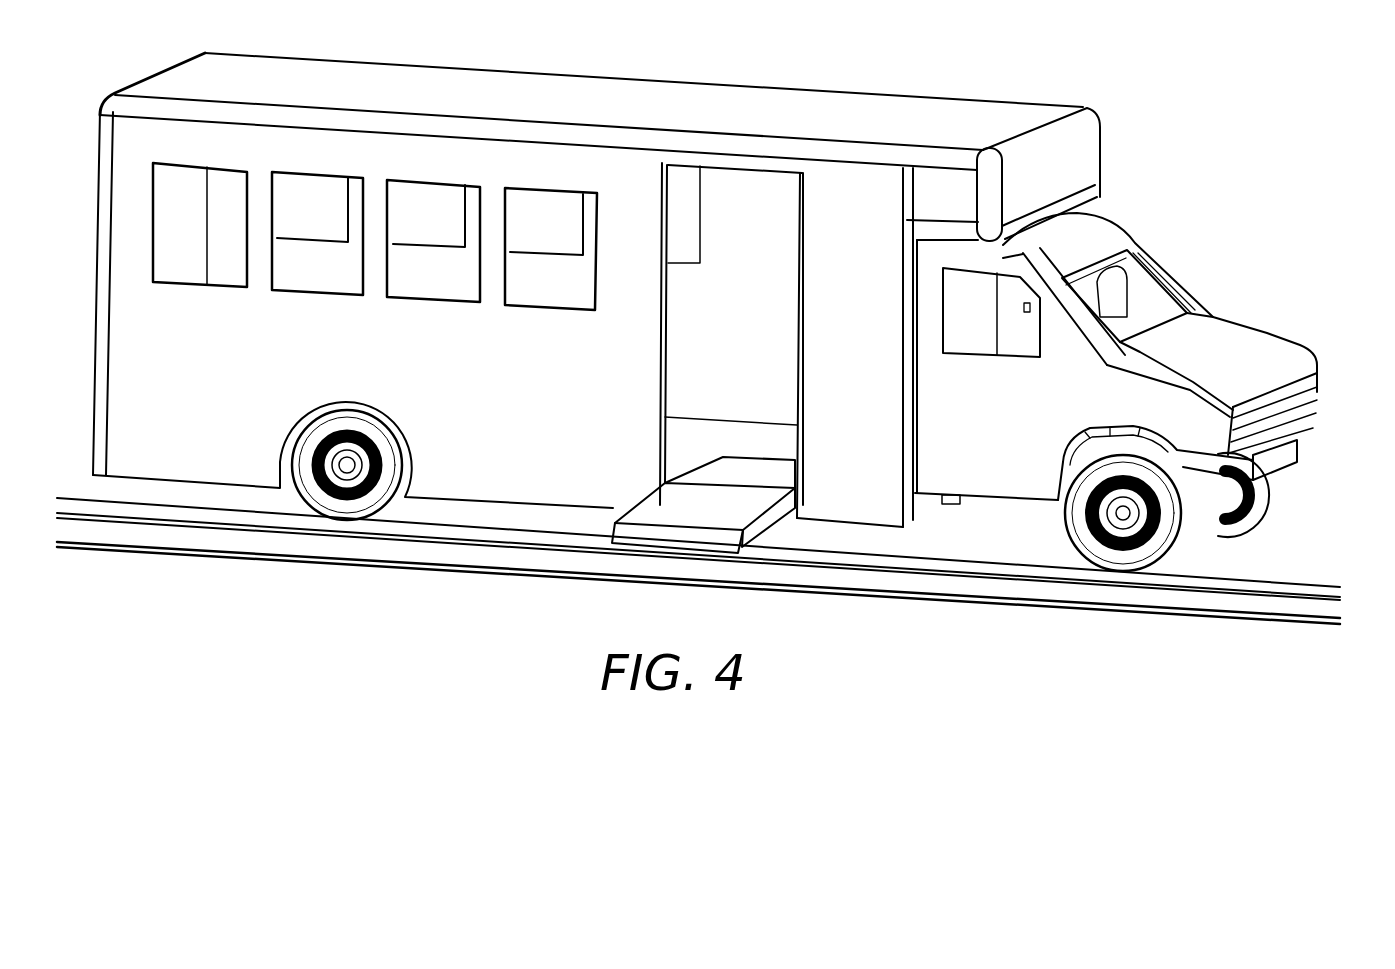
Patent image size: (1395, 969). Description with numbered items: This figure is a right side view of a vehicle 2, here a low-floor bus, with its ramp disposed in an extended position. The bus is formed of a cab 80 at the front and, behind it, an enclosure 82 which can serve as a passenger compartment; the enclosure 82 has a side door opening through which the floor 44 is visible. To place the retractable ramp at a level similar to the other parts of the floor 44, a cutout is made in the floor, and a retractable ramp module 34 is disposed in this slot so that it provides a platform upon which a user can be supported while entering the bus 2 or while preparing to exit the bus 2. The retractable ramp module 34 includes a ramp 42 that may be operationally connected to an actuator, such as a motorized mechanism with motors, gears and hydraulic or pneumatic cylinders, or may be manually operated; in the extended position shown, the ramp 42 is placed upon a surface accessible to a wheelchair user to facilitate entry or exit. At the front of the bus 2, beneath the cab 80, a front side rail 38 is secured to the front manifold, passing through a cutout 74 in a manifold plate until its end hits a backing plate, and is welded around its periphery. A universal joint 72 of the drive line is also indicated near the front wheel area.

The vehicle 2 is at (445, 475).
The retractable ramp module 34 is at (785, 523).
The front side rail 38 is at (1287, 453).
The ramp 42 is at (710, 543).
The floor 44 is at (698, 452).
The universal joint 72 is at (1277, 585).
The cutout 74 is at (1322, 593).
The cab 80 is at (997, 414).
The enclosure which can serve as a passenger compartment 82 is at (517, 393).